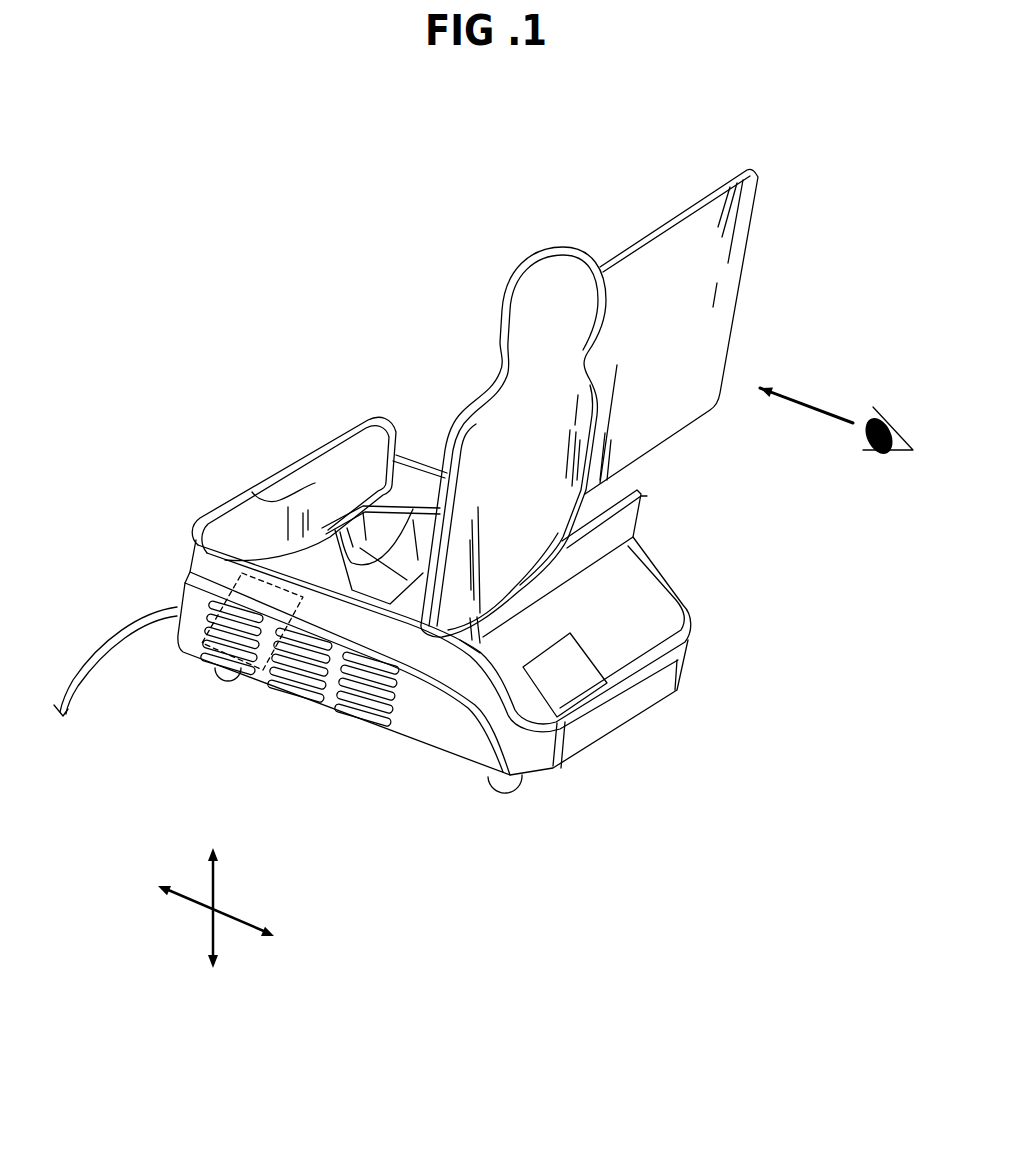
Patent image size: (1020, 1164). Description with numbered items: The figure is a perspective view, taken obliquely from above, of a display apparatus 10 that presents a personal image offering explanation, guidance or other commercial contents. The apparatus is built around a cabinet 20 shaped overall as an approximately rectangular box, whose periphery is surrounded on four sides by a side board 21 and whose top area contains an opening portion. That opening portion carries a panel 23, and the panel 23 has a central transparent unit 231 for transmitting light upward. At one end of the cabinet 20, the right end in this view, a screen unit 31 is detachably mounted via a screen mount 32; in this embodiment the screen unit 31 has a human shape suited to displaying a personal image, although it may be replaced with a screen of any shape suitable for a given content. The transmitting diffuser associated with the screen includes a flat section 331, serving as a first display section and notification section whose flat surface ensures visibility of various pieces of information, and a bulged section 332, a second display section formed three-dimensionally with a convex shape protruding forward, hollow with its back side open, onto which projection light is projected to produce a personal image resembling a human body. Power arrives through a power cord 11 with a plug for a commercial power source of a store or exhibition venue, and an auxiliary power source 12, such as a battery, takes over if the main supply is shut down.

The display apparatus 10 is at (375, 300).
The power cord 11 is at (120, 633).
The auxiliary power source 12 is at (222, 575).
The cabinet 20 is at (437, 722).
The side board 21 is at (420, 700).
The panel 23 is at (433, 492).
The central transparent unit 231 is at (396, 568).
The screen unit 31 is at (778, 207).
The screen mount 32 is at (645, 520).
The flat section 331 is at (707, 297).
The bulged section 332 is at (570, 258).